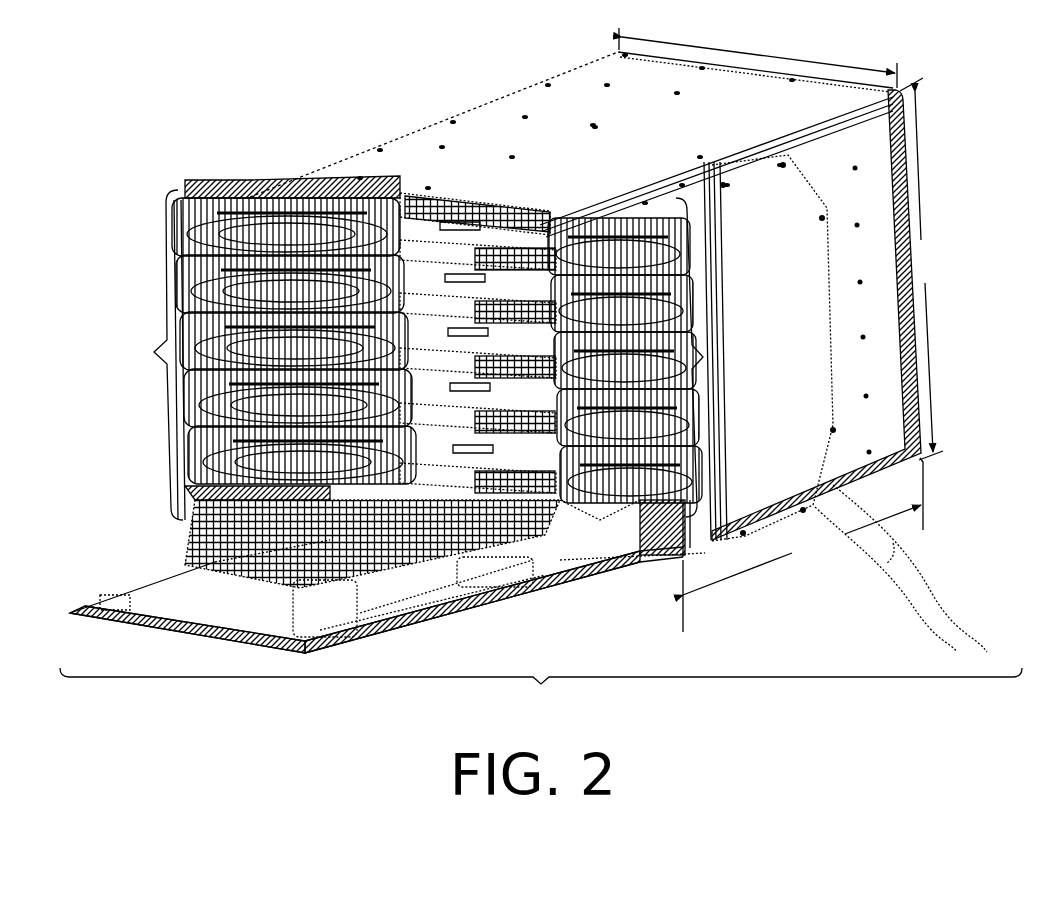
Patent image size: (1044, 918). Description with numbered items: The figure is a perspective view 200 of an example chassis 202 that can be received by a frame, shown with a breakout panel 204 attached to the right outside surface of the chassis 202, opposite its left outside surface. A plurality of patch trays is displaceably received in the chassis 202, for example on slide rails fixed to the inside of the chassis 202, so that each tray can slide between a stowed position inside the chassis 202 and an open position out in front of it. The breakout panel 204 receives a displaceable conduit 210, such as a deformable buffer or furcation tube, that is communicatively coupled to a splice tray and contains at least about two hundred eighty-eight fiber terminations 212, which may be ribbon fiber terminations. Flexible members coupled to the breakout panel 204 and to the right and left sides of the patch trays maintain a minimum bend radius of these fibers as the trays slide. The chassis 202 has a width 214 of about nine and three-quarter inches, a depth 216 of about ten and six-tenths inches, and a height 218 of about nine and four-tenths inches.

The perspective view 200 is at (541, 370).
The chassis 202 is at (465, 110).
The breakout panel 204 is at (828, 198).
The displaceable conduit 210 is at (922, 555).
The fiber terminations 212 is at (945, 569).
The width 214 is at (758, 58).
The depth 216 is at (803, 545).
The height 218 is at (921, 269).